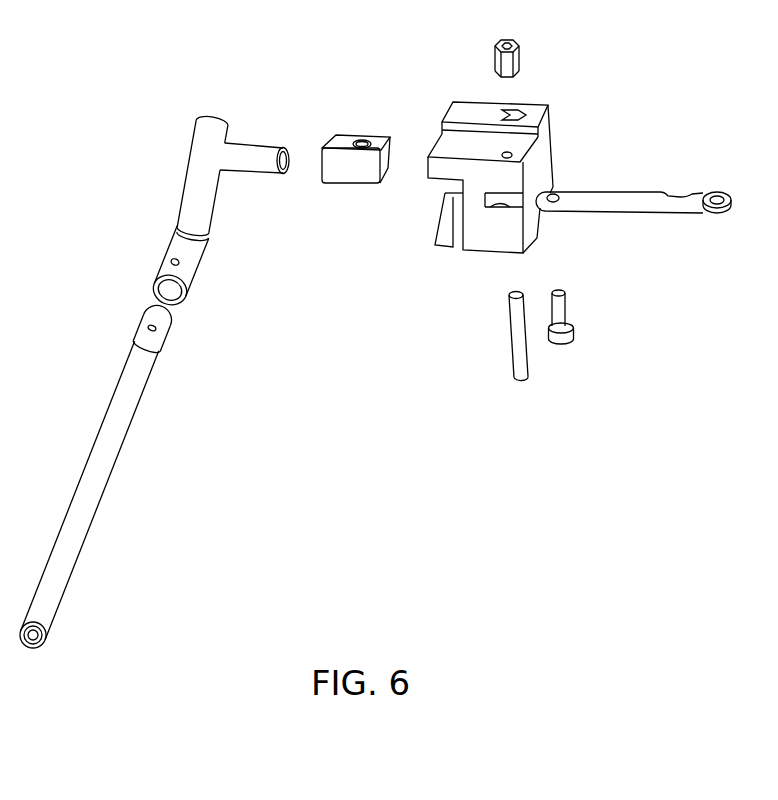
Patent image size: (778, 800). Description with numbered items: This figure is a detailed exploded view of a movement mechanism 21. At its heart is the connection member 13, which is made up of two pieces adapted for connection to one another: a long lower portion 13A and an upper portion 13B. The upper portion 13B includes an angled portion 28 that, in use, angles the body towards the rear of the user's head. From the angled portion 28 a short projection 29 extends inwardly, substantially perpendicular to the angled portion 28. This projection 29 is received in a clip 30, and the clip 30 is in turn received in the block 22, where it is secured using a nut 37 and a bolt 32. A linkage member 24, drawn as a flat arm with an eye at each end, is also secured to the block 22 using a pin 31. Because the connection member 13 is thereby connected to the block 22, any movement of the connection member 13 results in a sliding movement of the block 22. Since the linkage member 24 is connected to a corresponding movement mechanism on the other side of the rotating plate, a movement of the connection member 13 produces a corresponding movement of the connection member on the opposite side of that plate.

The connection member 13 is at (113, 308).
The lower portion 13A is at (115, 415).
The upper portion 13B is at (165, 228).
The movement mechanism 21 is at (566, 163).
The block 22 is at (468, 114).
The linkage member 24 is at (628, 202).
The angled portion 28 is at (198, 195).
The projection 29 is at (243, 148).
The clip 30 is at (338, 162).
The pin 31 is at (518, 352).
The bolt 32 is at (560, 312).
The nut 37 is at (521, 52).